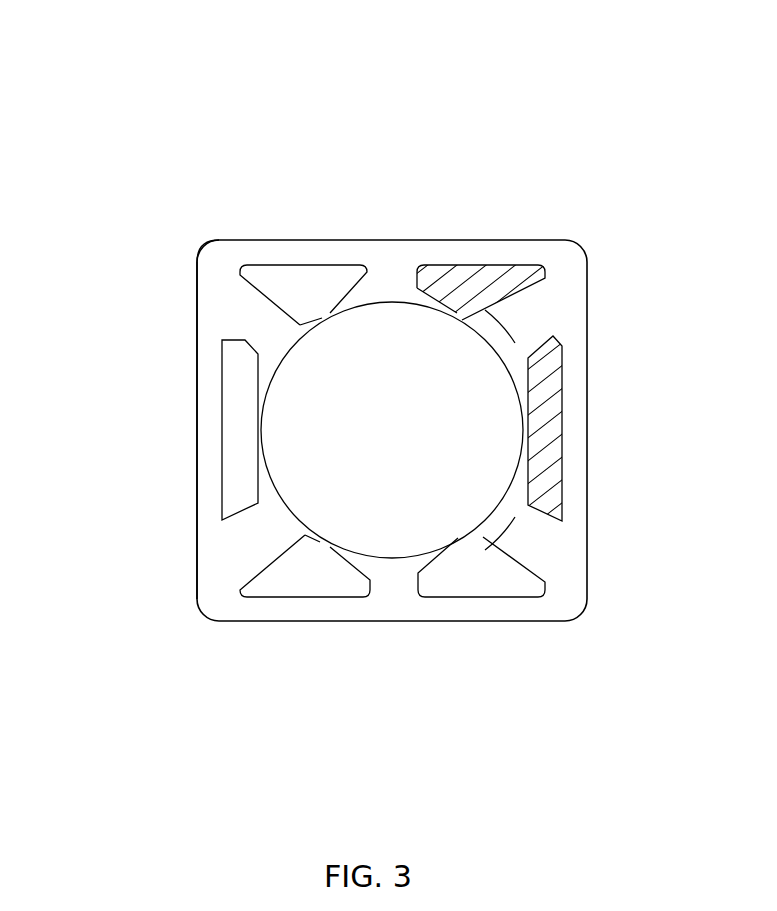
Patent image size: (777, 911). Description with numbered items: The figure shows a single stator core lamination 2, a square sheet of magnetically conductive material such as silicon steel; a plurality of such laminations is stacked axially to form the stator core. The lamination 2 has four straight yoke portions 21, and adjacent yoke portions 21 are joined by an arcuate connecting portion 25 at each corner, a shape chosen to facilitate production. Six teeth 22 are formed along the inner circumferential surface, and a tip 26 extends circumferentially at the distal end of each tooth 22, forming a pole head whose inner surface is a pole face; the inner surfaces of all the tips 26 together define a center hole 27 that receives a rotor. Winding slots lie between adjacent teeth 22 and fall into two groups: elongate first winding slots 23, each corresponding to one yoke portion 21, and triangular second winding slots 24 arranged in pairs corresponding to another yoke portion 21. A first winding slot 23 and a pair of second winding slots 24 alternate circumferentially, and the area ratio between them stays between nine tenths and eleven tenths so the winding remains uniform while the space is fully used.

The stator core lamination 2 is at (455, 168).
The yoke portion 21 is at (207, 398).
The tooth 22 is at (517, 525).
The first winding slot 23 is at (227, 492).
The second winding slot 24 is at (298, 292).
The connecting portion 25 is at (203, 254).
The tip 26 is at (513, 358).
The center hole 27 is at (448, 492).